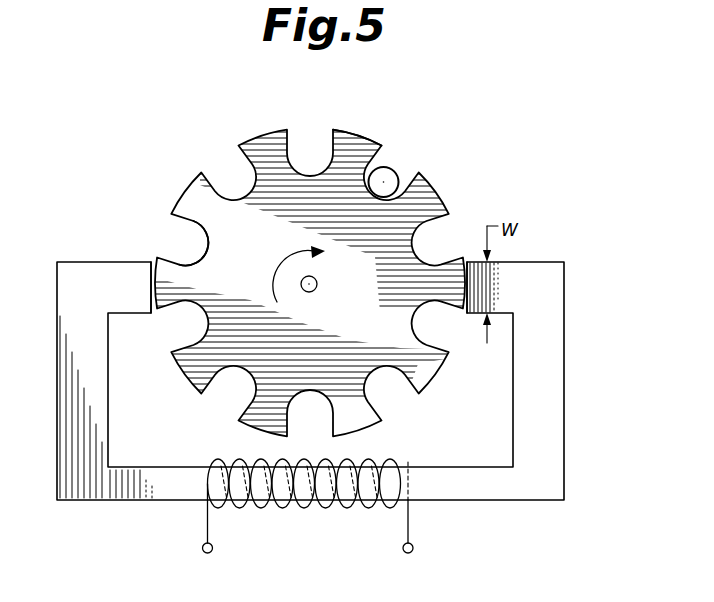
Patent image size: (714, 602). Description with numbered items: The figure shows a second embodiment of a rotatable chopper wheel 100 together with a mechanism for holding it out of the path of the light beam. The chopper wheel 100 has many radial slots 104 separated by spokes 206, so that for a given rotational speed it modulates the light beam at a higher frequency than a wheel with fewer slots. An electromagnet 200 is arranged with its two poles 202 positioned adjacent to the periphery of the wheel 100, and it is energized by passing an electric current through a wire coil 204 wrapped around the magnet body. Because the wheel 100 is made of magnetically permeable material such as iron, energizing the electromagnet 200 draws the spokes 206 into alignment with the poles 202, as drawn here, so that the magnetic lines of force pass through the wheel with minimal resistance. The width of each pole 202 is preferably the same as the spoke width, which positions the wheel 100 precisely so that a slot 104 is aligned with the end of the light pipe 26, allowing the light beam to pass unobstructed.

The chopper wheel 100 is at (230, 126).
The radial slot 104 is at (177, 239).
The spoke 206 is at (348, 138).
The light pipe 26 is at (392, 170).
The electromagnet 200 is at (586, 420).
The pole 202 is at (148, 288).
The wire coil 204 is at (288, 510).